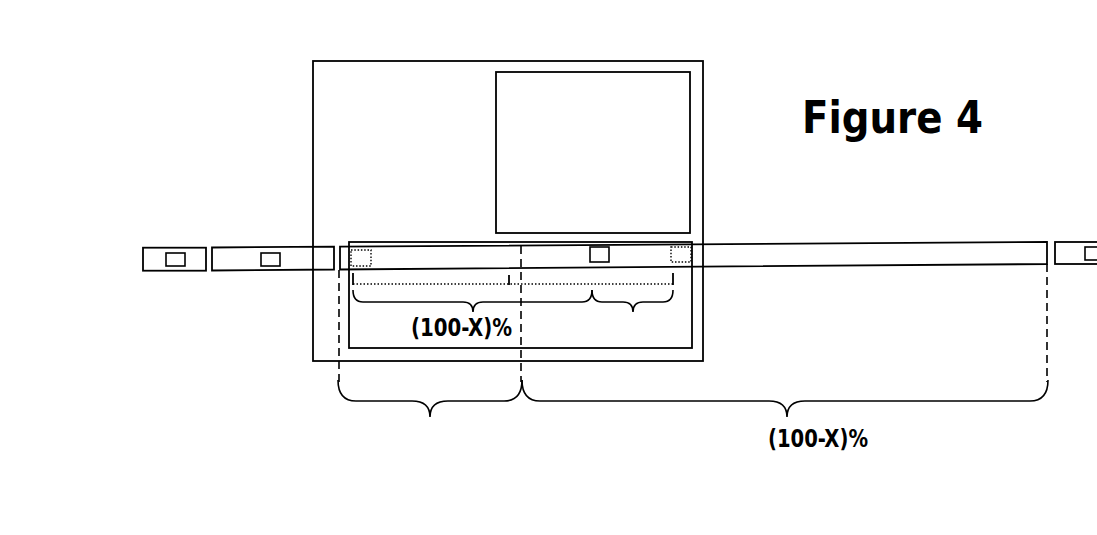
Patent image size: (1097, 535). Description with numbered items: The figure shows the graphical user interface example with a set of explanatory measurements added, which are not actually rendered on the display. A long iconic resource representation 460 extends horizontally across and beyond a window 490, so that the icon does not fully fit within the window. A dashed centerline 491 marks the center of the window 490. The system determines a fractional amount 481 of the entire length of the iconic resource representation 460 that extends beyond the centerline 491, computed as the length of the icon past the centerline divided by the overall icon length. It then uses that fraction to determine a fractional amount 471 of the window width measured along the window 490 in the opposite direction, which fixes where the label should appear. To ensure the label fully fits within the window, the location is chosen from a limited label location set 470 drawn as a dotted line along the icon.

The iconic resource representation 460 is at (876, 273).
The label location set 470 is at (692, 285).
The fractional amount of the window width 471 is at (642, 349).
The fractional amount of the iconic resource representation 481 is at (477, 447).
The window 490 is at (704, 340).
The centerline 491 is at (577, 380).